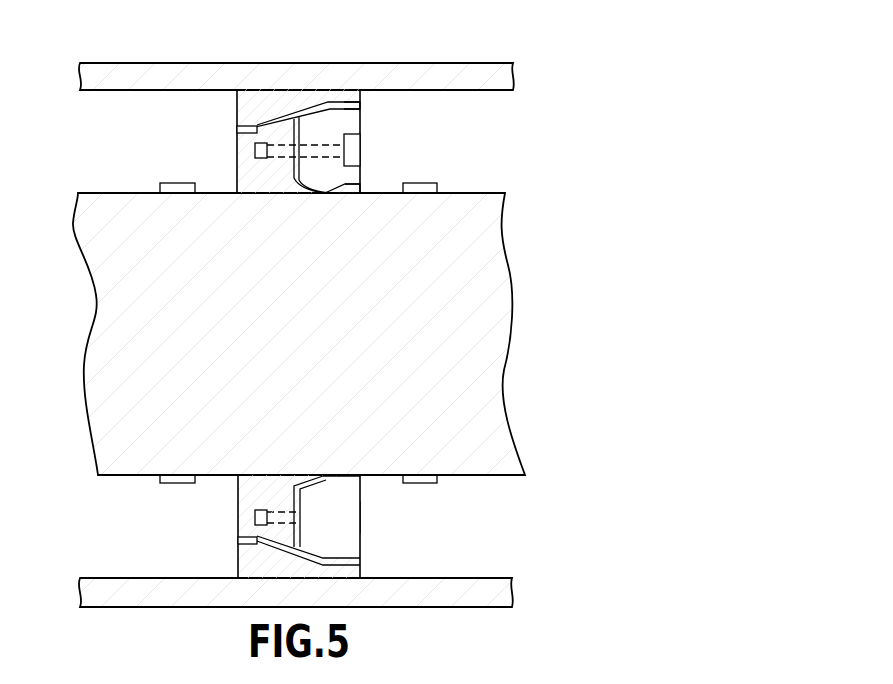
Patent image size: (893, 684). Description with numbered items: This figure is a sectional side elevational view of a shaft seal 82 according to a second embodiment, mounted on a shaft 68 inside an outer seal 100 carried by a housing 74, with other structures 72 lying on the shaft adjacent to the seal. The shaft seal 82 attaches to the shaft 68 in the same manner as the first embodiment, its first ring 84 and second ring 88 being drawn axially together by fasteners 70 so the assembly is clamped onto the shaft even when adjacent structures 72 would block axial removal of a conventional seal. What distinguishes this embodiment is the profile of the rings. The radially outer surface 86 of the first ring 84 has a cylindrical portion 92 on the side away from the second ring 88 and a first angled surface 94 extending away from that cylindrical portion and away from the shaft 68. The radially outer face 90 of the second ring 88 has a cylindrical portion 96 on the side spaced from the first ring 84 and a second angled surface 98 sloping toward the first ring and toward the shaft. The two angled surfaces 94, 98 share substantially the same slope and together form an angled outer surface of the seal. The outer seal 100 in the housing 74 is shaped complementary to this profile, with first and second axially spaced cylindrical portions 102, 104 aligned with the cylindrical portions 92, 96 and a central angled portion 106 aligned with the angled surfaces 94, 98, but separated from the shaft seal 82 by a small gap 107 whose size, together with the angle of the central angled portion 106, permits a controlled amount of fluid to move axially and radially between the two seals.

The shaft 68 is at (502, 292).
The threaded fasteners 70 is at (360, 152).
The other structures 72 is at (437, 188).
The housing 74 is at (477, 74).
The shaft seal 82 is at (215, 541).
The first ring 84 is at (238, 182).
The radially outer surface 86 is at (257, 152).
The second ring 88 is at (360, 187).
The radially outer face 90 is at (360, 118).
The cylindrical portion 92 is at (249, 130).
The first angled surface 94 is at (279, 123).
The cylindrical portion 96 is at (360, 104).
The second angled surface 98 is at (312, 102).
The outer seal 100 is at (296, 97).
The first cylindrical portion 102 is at (240, 548).
The second cylindrical portion 104 is at (360, 547).
The central angled portion 106 is at (302, 553).
The gap 107 is at (256, 538).